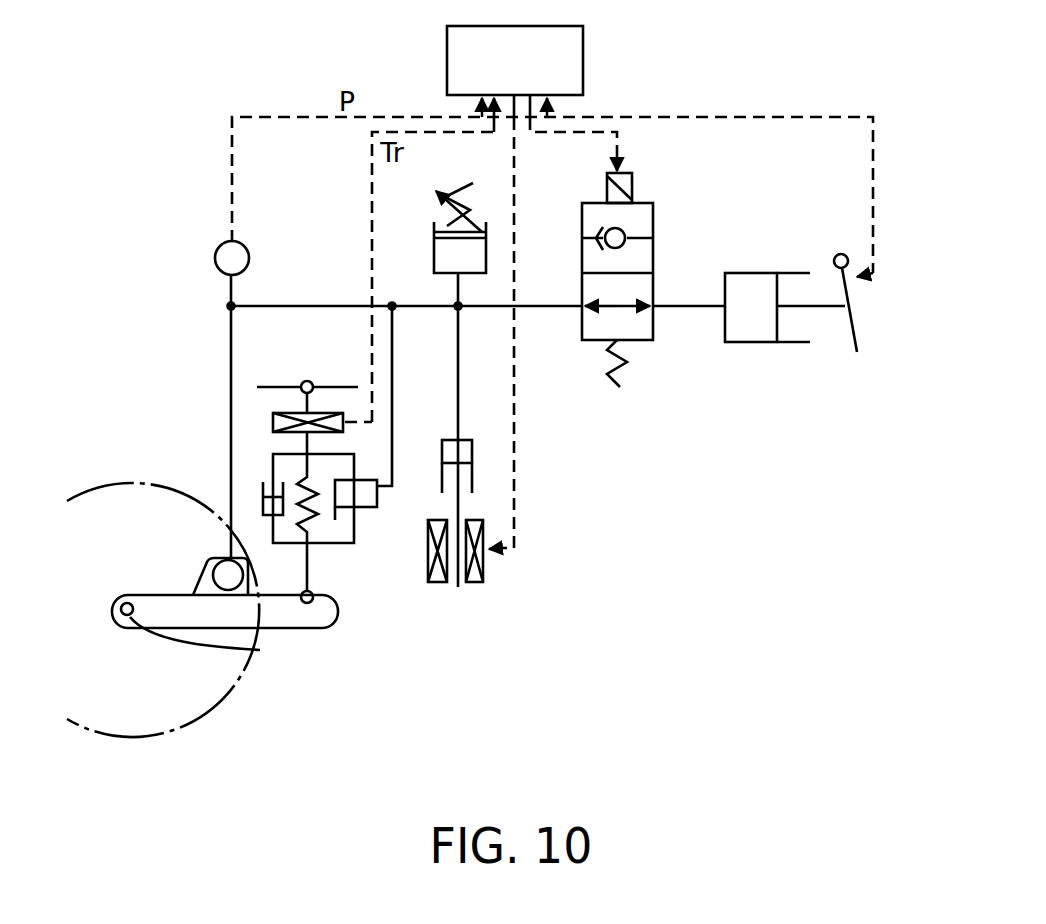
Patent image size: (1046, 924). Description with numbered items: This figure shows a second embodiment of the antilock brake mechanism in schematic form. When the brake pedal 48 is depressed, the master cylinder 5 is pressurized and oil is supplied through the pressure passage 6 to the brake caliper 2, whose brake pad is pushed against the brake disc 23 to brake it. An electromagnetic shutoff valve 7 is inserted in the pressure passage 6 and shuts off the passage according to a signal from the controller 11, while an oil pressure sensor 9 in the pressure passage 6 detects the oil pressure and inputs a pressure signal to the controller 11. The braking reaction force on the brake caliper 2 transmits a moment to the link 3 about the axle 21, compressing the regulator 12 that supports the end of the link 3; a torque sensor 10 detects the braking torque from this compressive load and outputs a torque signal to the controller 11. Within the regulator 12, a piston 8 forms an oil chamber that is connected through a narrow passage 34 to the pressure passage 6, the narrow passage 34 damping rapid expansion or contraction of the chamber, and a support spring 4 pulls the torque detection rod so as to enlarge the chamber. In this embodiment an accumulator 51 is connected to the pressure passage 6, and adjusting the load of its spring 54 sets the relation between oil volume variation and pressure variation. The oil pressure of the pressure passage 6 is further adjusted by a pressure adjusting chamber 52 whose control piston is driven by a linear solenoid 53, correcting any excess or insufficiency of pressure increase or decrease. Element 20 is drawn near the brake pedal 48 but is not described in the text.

The brake caliper 2 is at (233, 577).
The link 3 is at (338, 607).
The support spring 4 is at (305, 517).
The master cylinder 5 is at (752, 342).
The pressure passage 6 is at (231, 337).
The electromagnetic shutoff valve 7 is at (642, 340).
The piston 8 is at (363, 510).
The oil pressure sensor 9 is at (213, 253).
The torque sensor 10 is at (343, 423).
The controller 11 is at (583, 62).
The regulator 12 is at (357, 553).
The position sensor 20 is at (860, 278).
The axle 21 is at (214, 642).
The brake disc 23 is at (223, 705).
The narrow passage 34 is at (262, 490).
The brake pedal 48 is at (857, 337).
The accumulator 51 is at (434, 245).
The pressure adjusting chamber 52 is at (470, 440).
The linear solenoid 53 is at (483, 567).
The spring 54 is at (432, 190).